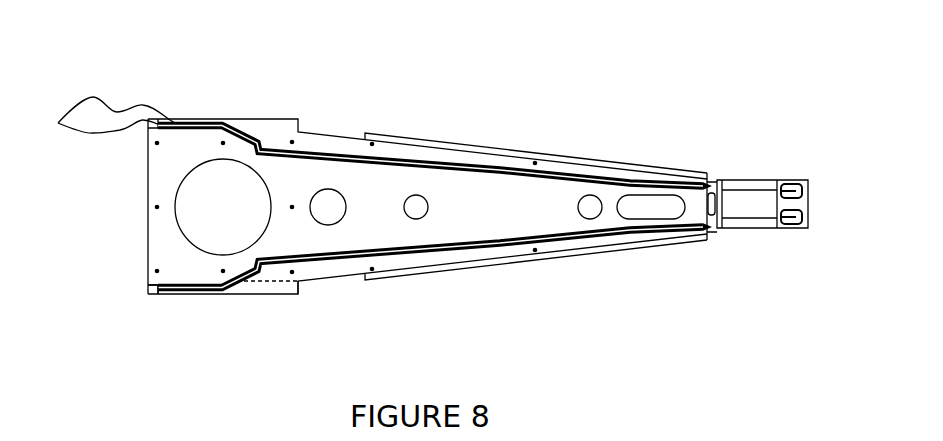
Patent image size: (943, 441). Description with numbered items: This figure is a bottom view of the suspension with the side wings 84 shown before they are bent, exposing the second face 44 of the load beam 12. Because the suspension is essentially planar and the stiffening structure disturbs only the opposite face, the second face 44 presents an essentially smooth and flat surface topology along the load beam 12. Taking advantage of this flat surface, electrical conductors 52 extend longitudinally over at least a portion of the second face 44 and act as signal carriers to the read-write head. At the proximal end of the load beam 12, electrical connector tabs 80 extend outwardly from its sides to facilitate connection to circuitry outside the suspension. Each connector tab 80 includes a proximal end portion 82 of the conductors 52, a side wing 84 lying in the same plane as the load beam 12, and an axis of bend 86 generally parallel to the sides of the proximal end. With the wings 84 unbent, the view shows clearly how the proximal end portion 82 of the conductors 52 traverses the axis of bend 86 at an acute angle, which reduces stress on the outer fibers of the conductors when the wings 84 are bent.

The load beam 12 is at (783, 294).
The second face 44 is at (470, 192).
The electrical conductors 52 is at (448, 247).
The electrical connector tabs 80 is at (218, 114).
The proximal end portion of the electrical conductors 82 is at (97, 119).
The side wings 84 is at (237, 291).
The axis of bend 86 is at (292, 283).